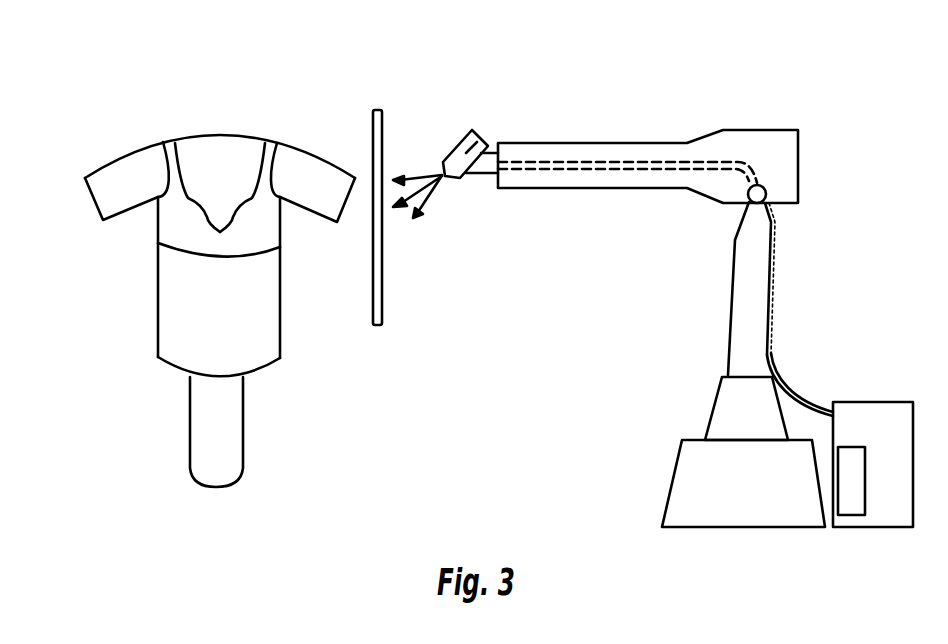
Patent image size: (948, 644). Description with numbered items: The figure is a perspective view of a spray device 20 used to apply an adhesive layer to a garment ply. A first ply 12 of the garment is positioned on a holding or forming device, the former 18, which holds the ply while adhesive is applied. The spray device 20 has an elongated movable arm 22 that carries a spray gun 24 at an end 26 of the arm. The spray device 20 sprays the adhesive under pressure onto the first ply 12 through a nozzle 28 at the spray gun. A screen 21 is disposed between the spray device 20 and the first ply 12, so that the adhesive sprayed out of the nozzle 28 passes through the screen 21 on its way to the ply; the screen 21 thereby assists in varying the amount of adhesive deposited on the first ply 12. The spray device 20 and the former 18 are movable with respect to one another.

The first ply 12 is at (106, 279).
The former 18 is at (203, 337).
The spray device 20 is at (862, 70).
The screen 21 is at (377, 327).
The elongated movable arm 22 is at (663, 157).
The spray gun 24 is at (472, 128).
The end 26 is at (515, 160).
The nozzle 28 is at (440, 167).